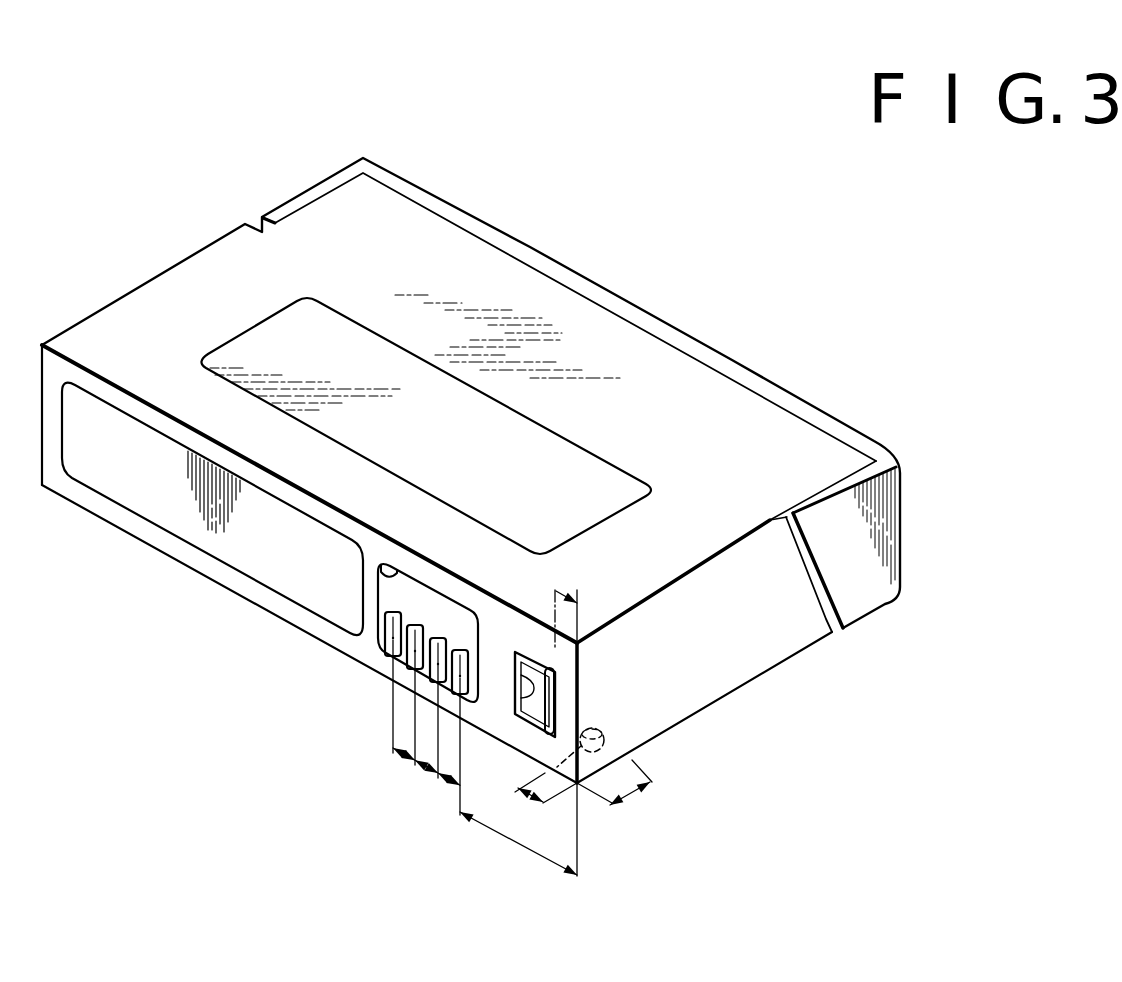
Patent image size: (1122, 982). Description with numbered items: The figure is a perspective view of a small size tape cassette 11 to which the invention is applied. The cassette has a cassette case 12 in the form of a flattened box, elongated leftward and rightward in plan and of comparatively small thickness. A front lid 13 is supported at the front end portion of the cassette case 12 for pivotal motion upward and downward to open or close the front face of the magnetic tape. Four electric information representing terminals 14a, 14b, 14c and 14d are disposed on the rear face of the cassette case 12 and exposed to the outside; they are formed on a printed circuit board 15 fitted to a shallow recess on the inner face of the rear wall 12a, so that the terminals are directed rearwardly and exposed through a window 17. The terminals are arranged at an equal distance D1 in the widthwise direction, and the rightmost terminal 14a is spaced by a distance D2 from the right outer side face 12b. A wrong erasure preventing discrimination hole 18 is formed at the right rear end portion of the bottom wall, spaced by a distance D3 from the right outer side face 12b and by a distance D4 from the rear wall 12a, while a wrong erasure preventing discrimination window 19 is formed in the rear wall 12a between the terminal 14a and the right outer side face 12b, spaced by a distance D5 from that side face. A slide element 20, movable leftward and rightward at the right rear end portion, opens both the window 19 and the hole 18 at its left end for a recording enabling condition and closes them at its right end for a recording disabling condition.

The small size tape cassette 11 is at (794, 273).
The cassette case 12 is at (803, 651).
The rear wall 12a is at (210, 533).
The right outer side face 12b is at (757, 656).
The front lid 13 is at (893, 500).
The electric information representing terminal 14a is at (466, 650).
The electric information representing terminal 14b is at (452, 638).
The electric information representing terminal 14c is at (418, 622).
The electric information representing terminal 14d is at (376, 620).
The printed circuit board 15 is at (410, 585).
The window 17 is at (386, 556).
The wrong erasure preventing discrimination hole 18 is at (598, 718).
The wrong erasure preventing discrimination window 19 is at (513, 652).
The slide element 20 is at (540, 668).
The distance D1 is at (405, 755).
The distance D2 is at (542, 856).
The distance D3 is at (522, 795).
The distance D4 is at (632, 790).
The distance D5 is at (606, 597).